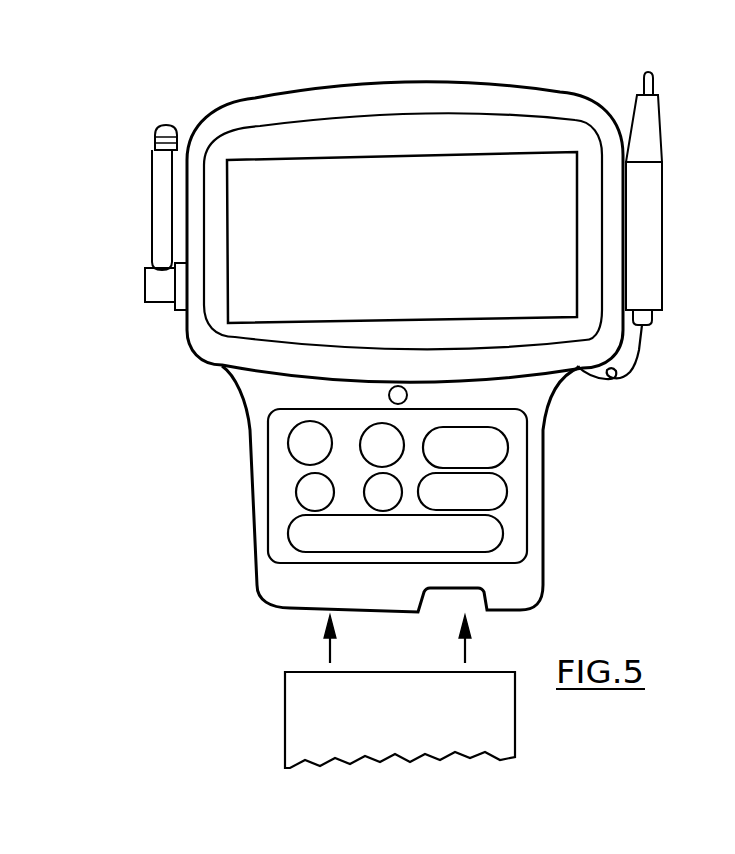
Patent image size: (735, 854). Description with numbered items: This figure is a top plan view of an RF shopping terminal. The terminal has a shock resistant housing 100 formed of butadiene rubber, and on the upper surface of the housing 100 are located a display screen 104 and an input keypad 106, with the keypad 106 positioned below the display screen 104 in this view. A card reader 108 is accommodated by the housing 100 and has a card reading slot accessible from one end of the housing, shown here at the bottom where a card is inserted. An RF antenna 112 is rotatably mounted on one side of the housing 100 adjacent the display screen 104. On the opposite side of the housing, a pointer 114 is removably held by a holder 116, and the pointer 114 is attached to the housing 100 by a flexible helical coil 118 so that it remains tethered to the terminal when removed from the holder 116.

The shock resistant housing 100 is at (273, 118).
The display screen 104 is at (503, 167).
The input keypad 106 is at (515, 517).
The card reader 108 is at (522, 609).
The RF antenna 112 is at (157, 192).
The pointer 114 is at (655, 135).
The holder 116 is at (656, 248).
The flexible helical coil 118 is at (622, 376).